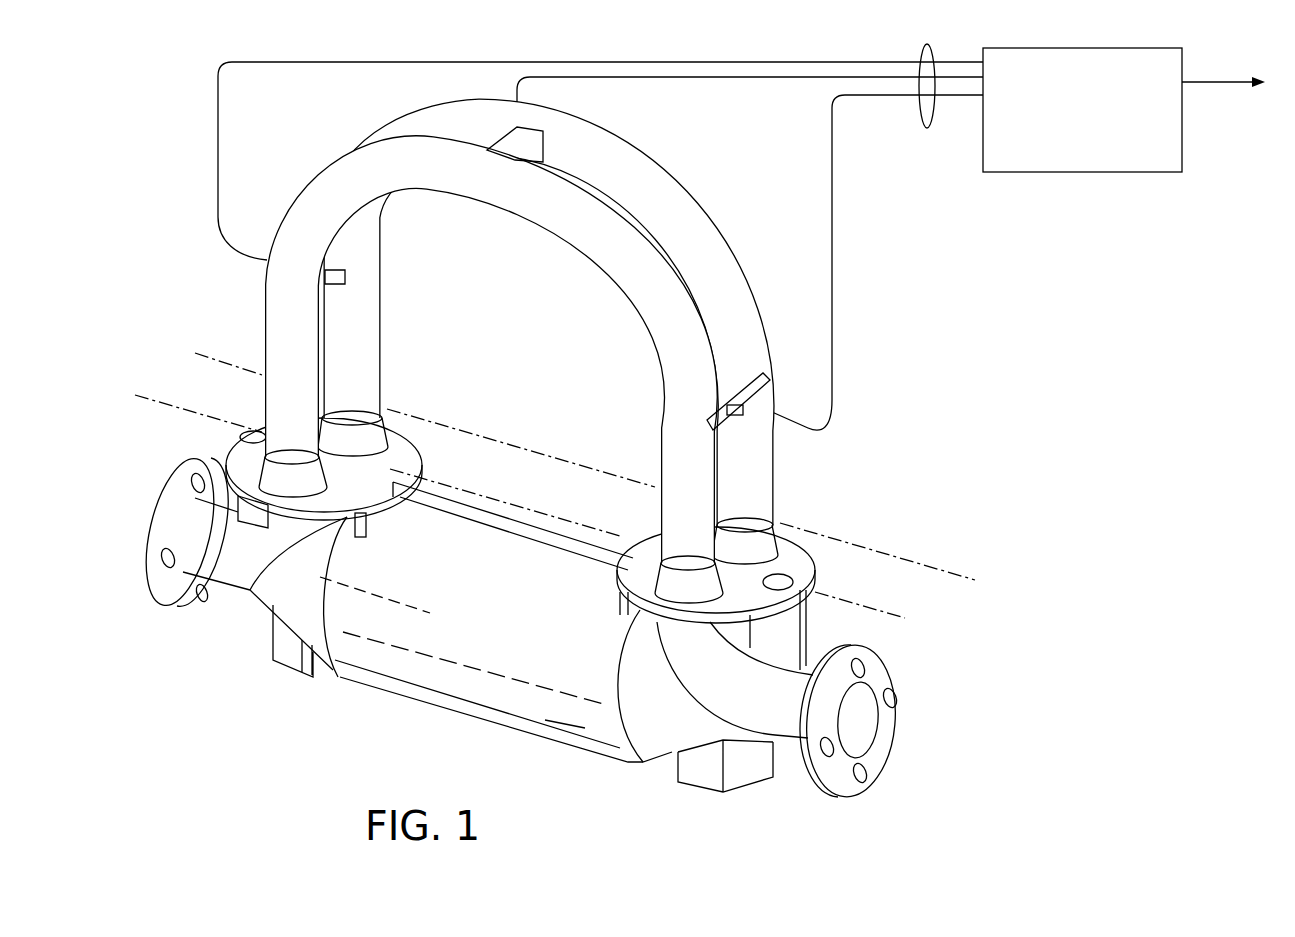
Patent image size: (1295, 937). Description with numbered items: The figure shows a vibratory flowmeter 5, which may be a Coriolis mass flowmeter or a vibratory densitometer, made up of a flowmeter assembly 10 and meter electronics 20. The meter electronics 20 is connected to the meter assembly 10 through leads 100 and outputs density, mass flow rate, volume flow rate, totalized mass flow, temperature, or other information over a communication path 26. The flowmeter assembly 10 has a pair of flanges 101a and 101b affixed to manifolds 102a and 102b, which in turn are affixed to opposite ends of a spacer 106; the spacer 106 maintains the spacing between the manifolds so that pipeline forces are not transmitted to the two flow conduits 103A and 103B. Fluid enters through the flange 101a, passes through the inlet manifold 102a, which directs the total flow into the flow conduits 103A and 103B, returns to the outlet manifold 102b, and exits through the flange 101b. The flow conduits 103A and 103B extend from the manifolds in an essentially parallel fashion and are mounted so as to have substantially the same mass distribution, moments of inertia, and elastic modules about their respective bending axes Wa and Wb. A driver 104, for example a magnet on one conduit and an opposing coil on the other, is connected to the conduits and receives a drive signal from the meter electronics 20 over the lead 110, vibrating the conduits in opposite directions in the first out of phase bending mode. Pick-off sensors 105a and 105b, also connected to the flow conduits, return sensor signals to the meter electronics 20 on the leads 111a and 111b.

The flowmeter assembly 10 is at (111, 192).
The vibratory flowmeter 5 is at (946, 372).
The meter electronics 20 is at (1100, 172).
The communication path 26 is at (1207, 83).
The leads 100 is at (930, 127).
The lead 110 is at (780, 78).
The lead 111a is at (218, 106).
The lead 111b is at (832, 287).
The flange 101a is at (152, 491).
The flange 101b is at (890, 742).
The inlet manifold 102a is at (277, 603).
The outlet manifold 102b is at (669, 768).
The flow conduit 103A is at (280, 292).
The flow conduit 103B is at (667, 183).
The driver 104 is at (540, 124).
The pick-off sensor 105a is at (332, 270).
The pick-off sensor 105b is at (760, 396).
The spacer 106 is at (498, 710).
The bending axis Wa is at (584, 465).
The bending axis Wb is at (520, 506).